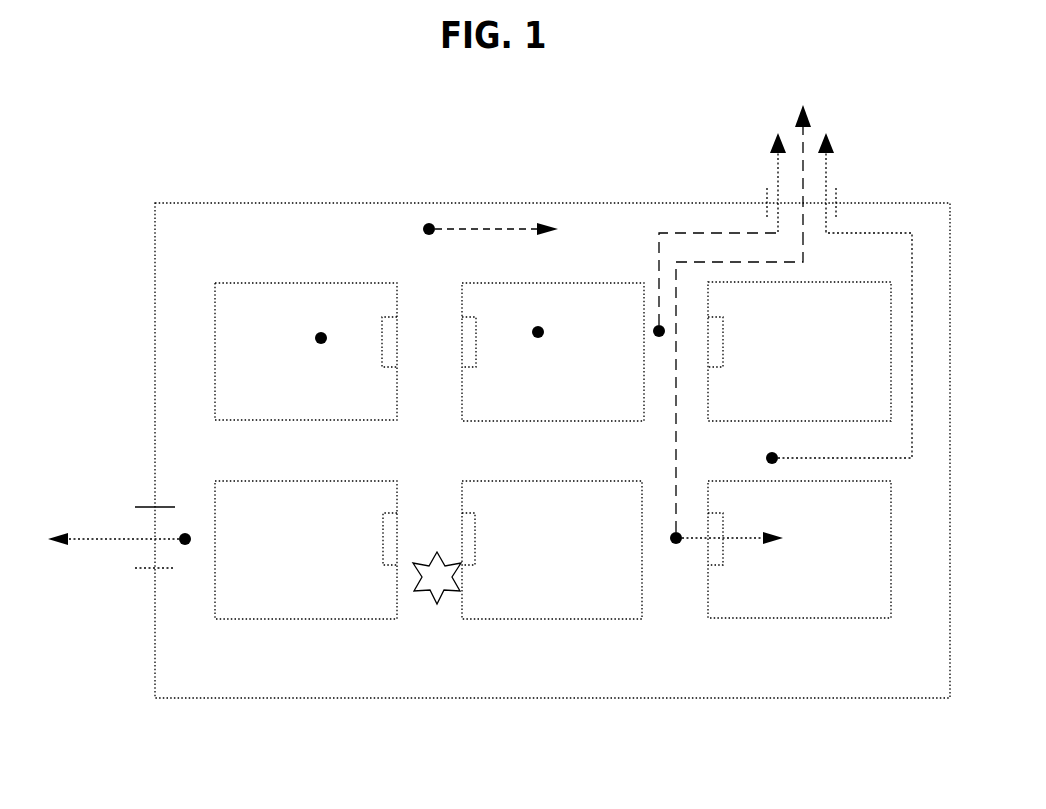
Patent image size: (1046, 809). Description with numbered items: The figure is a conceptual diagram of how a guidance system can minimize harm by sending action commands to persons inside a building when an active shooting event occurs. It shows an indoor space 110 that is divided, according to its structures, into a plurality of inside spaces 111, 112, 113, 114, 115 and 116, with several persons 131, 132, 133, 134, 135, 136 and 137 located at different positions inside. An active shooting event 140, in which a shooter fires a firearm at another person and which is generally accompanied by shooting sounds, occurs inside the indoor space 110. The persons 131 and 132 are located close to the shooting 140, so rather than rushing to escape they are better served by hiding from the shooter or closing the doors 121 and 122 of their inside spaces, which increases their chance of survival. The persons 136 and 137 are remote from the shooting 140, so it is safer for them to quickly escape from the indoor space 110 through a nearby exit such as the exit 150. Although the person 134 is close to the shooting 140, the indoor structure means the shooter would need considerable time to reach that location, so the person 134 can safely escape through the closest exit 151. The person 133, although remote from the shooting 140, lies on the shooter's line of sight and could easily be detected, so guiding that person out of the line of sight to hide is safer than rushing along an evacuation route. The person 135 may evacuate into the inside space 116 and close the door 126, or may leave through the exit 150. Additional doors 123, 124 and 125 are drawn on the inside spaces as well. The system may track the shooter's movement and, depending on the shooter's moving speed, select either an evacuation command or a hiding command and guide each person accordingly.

The indoor space 110 is at (237, 203).
The inside space 111 is at (325, 283).
The inside space 112 is at (598, 283).
The inside space 113 is at (878, 282).
The inside space 114 is at (283, 620).
The inside space 115 is at (588, 620).
The inside space 116 is at (843, 619).
The door 121 is at (381, 360).
The door 122 is at (478, 358).
The third opening 123 is at (729, 337).
The fourth opening 124 is at (383, 565).
The fifth opening 125 is at (476, 564).
The door 126 is at (724, 560).
The indoor person 131 is at (316, 341).
The indoor person 132 is at (546, 335).
The indoor person 133 is at (429, 223).
The indoor person 134 is at (185, 546).
The indoor person 135 is at (677, 545).
The indoor person 136 is at (656, 334).
The indoor person 137 is at (776, 450).
The active shooting event 140 is at (440, 603).
The exit 150 is at (803, 203).
The exit 151 is at (175, 539).